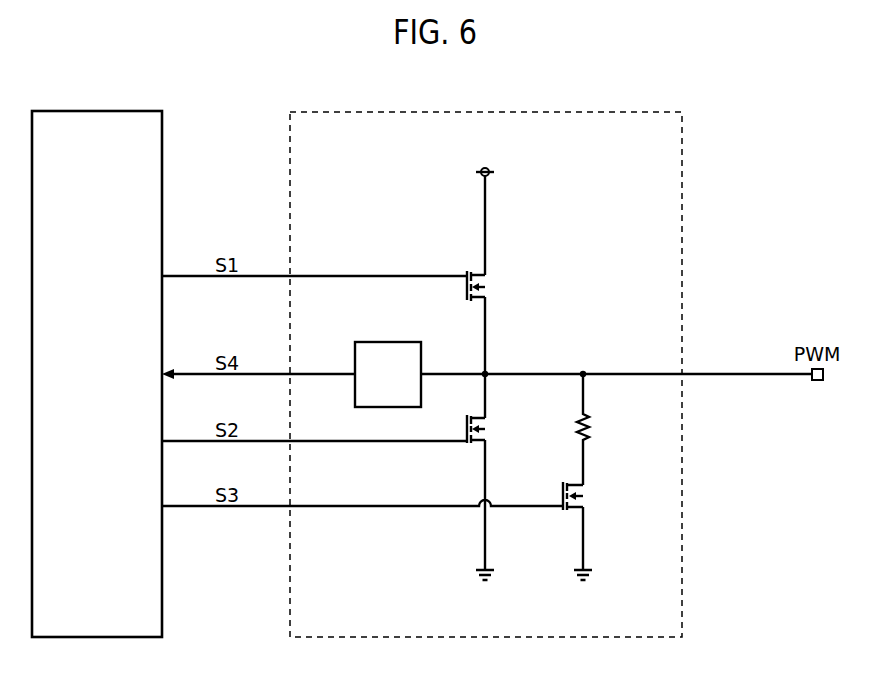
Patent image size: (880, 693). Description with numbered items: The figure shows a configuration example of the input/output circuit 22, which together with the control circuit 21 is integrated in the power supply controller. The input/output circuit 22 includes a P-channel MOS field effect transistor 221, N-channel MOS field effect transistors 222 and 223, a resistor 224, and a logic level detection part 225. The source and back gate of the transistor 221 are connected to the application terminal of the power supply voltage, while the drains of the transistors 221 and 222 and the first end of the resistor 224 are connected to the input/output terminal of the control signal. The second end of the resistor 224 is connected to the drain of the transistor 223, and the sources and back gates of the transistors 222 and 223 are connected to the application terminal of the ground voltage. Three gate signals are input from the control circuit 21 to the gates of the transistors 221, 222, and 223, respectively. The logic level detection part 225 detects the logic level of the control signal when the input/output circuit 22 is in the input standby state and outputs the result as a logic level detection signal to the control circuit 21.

The control circuit 21 is at (98, 111).
The input/output circuit 22 is at (487, 111).
The P-channel MOS field effect transistor 221 is at (490, 289).
The N-channel MOS field effect transistor 222 is at (490, 431).
The N-channel MOS field effect transistor 223 is at (590, 508).
The resistor 224 is at (594, 431).
The logic level detection part 225 is at (390, 342).